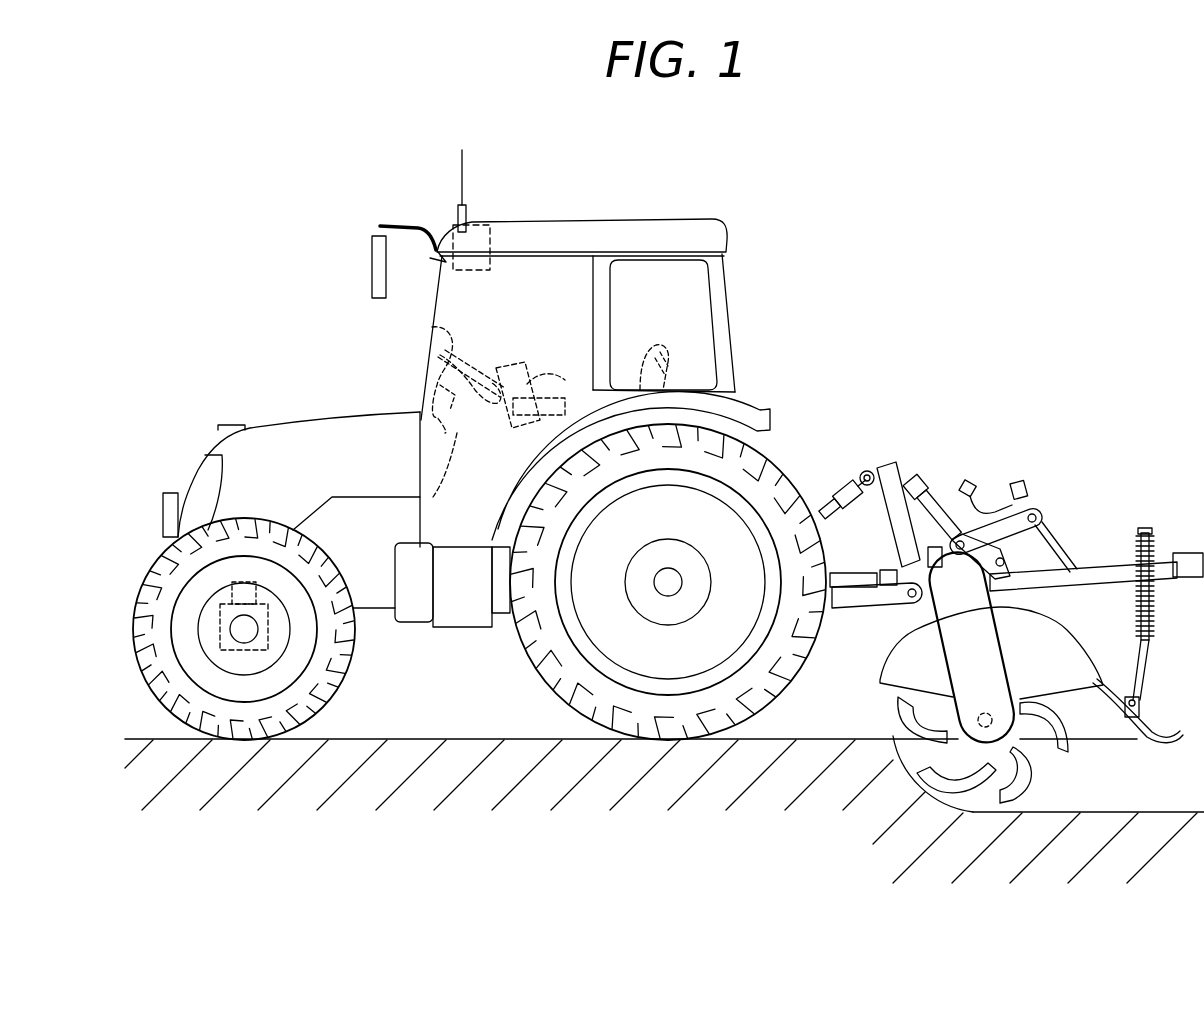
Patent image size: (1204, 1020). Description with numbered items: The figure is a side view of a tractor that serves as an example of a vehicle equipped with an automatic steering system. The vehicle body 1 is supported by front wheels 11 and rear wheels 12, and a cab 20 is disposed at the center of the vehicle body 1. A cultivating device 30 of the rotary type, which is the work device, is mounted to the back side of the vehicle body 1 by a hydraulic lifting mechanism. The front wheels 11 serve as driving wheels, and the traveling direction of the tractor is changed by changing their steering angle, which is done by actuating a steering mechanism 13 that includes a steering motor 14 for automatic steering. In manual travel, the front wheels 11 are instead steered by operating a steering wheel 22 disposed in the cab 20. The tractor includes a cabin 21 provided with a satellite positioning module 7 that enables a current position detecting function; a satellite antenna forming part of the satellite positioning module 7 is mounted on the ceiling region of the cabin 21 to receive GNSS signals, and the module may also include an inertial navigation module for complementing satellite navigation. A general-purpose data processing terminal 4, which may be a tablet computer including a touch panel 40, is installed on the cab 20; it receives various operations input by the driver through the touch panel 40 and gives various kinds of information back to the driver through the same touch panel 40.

The vehicle body 1 is at (277, 279).
The satellite positioning module 7 is at (487, 226).
The cab 20 is at (521, 324).
The cabin 21 is at (701, 230).
The steering wheel 22 is at (433, 328).
The data processing terminal 4 is at (527, 363).
The touch panel 40 is at (551, 383).
The cultivating device 30 is at (1073, 484).
The steering motor 14 is at (230, 593).
The steering mechanism 13 is at (264, 655).
The front wheels 11 is at (238, 734).
The rear wheels 12 is at (688, 740).